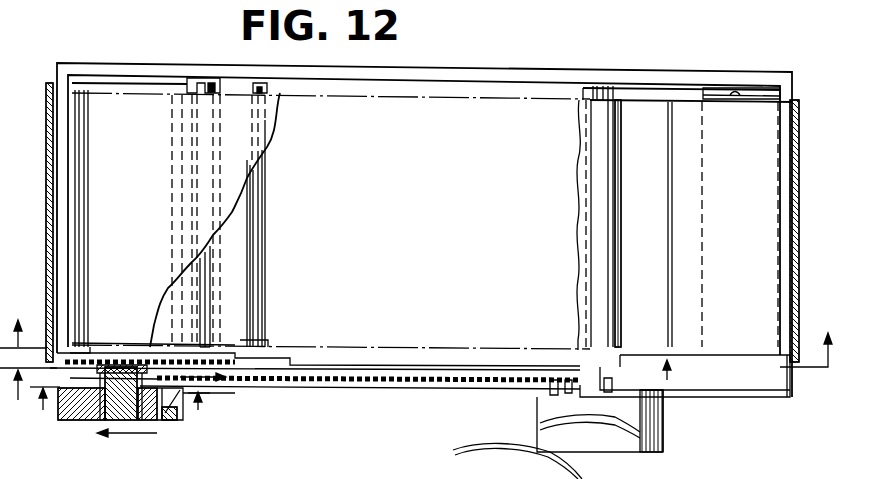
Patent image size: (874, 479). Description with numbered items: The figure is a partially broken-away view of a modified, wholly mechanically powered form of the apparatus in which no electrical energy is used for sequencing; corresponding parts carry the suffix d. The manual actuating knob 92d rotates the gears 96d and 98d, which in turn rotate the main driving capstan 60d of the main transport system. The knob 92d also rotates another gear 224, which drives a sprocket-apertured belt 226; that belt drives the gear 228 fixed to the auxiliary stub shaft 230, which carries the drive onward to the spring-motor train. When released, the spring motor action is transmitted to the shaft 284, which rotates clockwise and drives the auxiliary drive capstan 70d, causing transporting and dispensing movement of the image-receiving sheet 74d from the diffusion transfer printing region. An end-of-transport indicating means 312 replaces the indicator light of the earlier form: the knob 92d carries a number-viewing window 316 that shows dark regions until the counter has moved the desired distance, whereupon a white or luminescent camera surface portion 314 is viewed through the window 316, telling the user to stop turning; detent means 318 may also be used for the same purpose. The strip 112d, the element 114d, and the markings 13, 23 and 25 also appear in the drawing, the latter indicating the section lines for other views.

The image-receiving sheet 74d is at (160, 198).
The main driving capstan 60d is at (198, 290).
The gear 98d is at (213, 342).
The auxiliary drive capstan 70d is at (580, 250).
The sealing strip 112d is at (632, 213).
The gear 224 is at (78, 345).
The gear 96d is at (100, 363).
The sprocket-apertured belt 226 is at (400, 380).
The manual actuating knob 92d is at (83, 420).
The end-of-main-transporting-movement-indicating means 312 is at (162, 443).
The visible camera surface portion 314 is at (176, 412).
The number-viewing window 316 is at (168, 422).
The detent means 318 is at (190, 393).
The section line 23 is at (122, 412).
The section line 25 is at (346, 390).
The section line 13 is at (420, 327).
The shaft 284 is at (612, 380).
The gear 228 is at (555, 388).
The auxiliary stub shaft 230 is at (566, 388).
The cable 114d is at (661, 470).